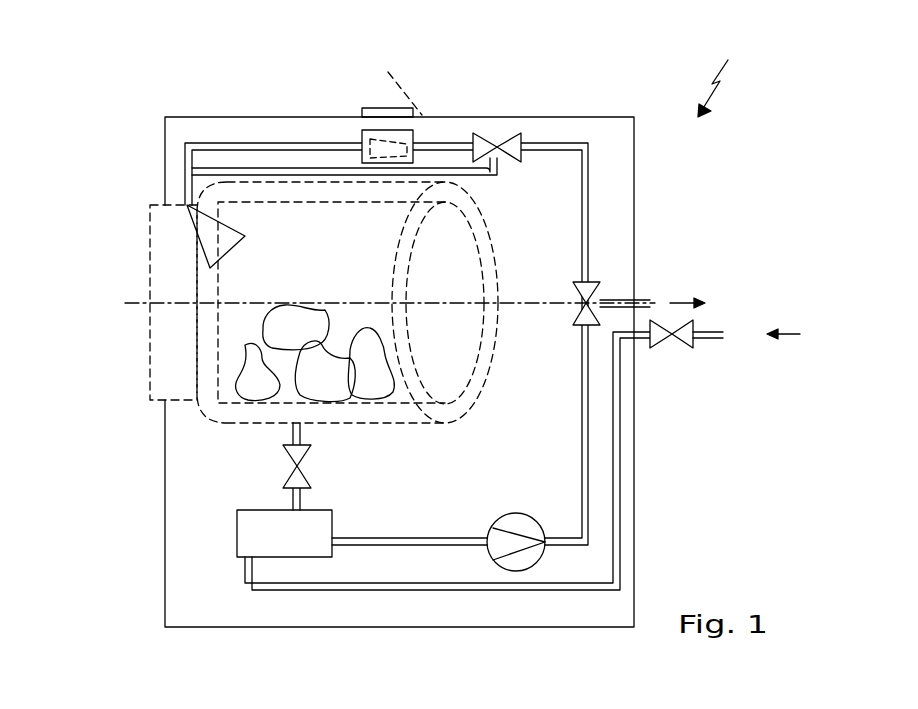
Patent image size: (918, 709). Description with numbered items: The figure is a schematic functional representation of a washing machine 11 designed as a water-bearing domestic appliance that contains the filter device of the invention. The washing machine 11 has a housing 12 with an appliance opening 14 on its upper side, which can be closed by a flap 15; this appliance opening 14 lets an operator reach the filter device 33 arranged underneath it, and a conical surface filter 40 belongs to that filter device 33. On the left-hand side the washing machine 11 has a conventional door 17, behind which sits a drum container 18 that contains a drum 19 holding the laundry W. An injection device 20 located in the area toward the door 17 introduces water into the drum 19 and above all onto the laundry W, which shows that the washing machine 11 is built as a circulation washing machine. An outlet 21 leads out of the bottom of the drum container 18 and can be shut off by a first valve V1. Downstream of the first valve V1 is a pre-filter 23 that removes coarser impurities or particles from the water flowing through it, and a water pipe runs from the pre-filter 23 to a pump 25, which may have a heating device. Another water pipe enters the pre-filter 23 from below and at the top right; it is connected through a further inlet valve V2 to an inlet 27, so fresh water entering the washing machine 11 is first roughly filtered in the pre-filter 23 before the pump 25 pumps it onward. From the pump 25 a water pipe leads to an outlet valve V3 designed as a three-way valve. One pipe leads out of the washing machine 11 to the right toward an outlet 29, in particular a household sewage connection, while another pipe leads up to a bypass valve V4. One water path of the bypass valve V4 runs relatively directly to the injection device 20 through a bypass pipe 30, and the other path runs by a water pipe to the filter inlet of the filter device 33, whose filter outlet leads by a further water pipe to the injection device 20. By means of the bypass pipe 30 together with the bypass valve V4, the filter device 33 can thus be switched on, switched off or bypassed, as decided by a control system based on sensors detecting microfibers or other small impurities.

The washing machine 11 is at (722, 75).
The housing 12 is at (634, 174).
The appliance opening 14 is at (375, 108).
The flap 15 is at (388, 70).
The door 17 is at (150, 357).
The drum container 18 is at (228, 423).
The drum 19 is at (218, 377).
The injection device 20 is at (208, 248).
The outlet 21 is at (300, 437).
The pre-filter 23 is at (272, 547).
The pump 25 is at (518, 563).
The inlet 27 is at (708, 328).
The outlet 29 is at (647, 300).
The bypass pipe 30 is at (448, 172).
The filter device 33 is at (360, 133).
The conical surface filter 40 is at (395, 140).
The first valve V1 is at (295, 465).
The inlet valve V2 is at (683, 345).
The outlet valve V3 is at (587, 283).
The bypass valve V4 is at (518, 140).
The laundry W is at (238, 332).